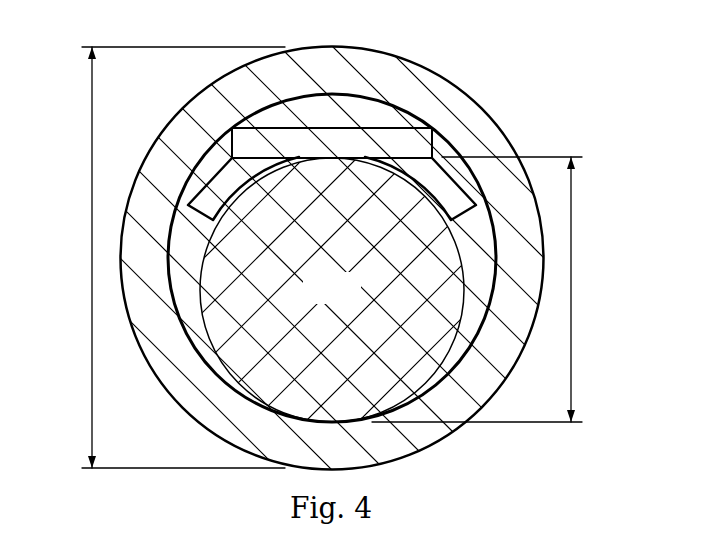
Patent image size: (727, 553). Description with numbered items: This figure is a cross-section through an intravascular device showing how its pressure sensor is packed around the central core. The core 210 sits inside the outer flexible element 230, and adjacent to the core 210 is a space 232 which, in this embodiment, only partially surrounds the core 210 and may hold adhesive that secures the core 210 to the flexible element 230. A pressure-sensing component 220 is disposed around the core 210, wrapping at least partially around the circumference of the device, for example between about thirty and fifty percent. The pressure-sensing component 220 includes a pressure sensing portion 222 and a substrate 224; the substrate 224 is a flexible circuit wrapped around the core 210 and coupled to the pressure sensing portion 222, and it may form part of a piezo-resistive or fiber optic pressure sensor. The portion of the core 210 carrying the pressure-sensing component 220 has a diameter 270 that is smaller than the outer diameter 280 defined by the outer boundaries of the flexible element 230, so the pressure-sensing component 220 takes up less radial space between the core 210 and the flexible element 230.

The core 210 is at (350, 299).
The pressure-sensing component 220 is at (304, 110).
The pressure sensing portion 222 is at (406, 138).
The substrate 224 is at (220, 180).
The flexible element 230 is at (428, 437).
The space 232 is at (202, 340).
The diameter 270 is at (572, 290).
The outer diameter 280 is at (91, 258).